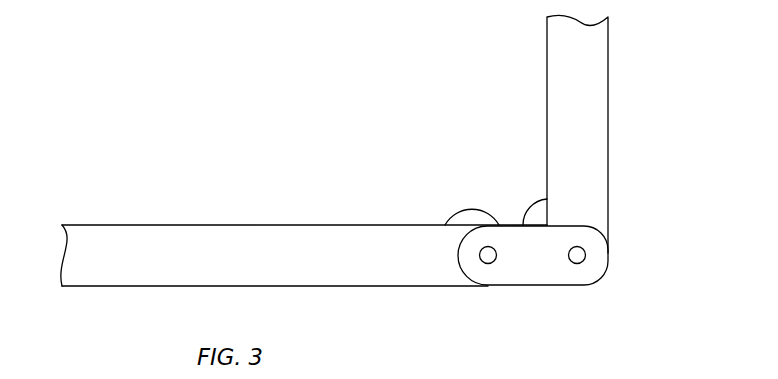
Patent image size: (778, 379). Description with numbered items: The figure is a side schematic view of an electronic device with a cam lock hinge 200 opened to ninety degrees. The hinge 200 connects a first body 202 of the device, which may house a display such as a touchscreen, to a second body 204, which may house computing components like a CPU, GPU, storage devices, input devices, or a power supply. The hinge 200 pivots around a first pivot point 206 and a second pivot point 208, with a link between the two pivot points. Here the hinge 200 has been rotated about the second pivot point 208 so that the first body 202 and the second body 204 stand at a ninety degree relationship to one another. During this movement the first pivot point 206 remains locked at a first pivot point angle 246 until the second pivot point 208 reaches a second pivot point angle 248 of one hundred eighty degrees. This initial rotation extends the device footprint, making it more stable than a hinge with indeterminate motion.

The hinge 200 is at (430, 54).
The first body 202 is at (597, 113).
The second body 204 is at (155, 267).
The first pivot point 206 is at (586, 254).
The second pivot point 208 is at (488, 255).
The first pivot point angle 246 is at (542, 199).
The second pivot point angle 248 is at (470, 208).